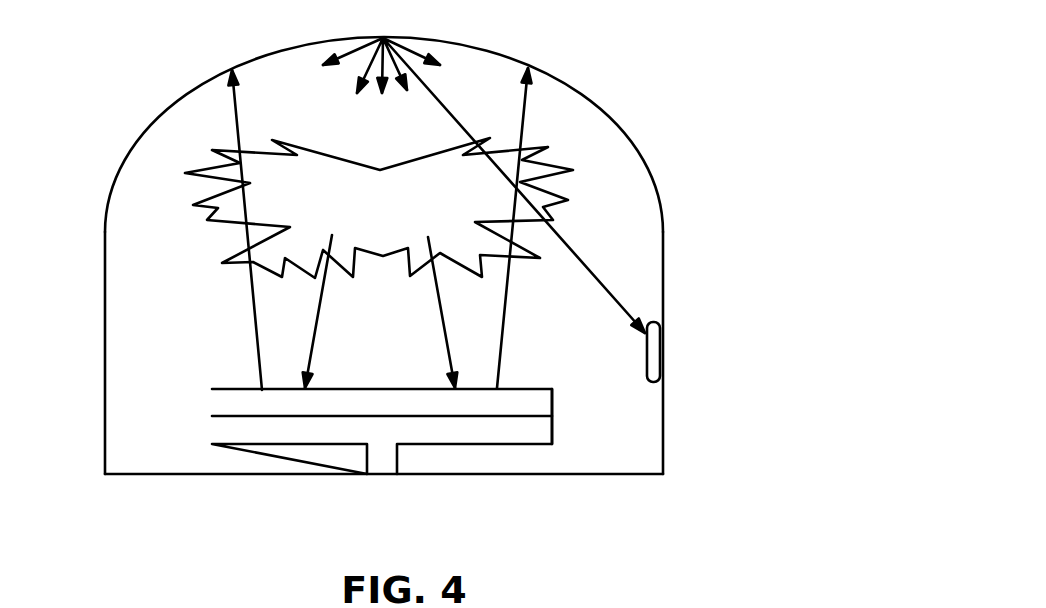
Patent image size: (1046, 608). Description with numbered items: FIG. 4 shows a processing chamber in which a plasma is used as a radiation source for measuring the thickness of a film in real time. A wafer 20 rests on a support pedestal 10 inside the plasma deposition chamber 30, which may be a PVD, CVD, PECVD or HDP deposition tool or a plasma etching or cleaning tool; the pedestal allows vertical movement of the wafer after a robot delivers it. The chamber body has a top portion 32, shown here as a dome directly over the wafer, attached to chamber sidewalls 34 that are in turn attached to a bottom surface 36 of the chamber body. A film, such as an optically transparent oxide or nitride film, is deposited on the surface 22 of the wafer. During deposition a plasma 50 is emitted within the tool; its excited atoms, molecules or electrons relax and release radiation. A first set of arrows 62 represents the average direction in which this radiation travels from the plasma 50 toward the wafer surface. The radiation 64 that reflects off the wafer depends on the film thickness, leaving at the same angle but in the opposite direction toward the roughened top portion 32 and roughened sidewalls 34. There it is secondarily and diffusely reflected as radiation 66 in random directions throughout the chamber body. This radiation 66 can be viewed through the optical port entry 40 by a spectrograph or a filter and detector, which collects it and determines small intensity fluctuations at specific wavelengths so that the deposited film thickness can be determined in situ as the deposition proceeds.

The support pedestal 10 is at (250, 433).
The wafer 20 is at (250, 403).
The wafer surface 22 is at (538, 387).
The plasma deposition chamber 30 is at (386, 272).
The top portion 32 is at (277, 50).
The chamber sidewalls 34 is at (103, 283).
The bottom wall 36 is at (495, 475).
The optical port entry 40 is at (665, 352).
The plasma 50 is at (397, 216).
The radiation emitted from plasma 62 is at (447, 320).
The reflected radiation 64 is at (252, 290).
The diffusely reflected radiation 66 is at (360, 40).